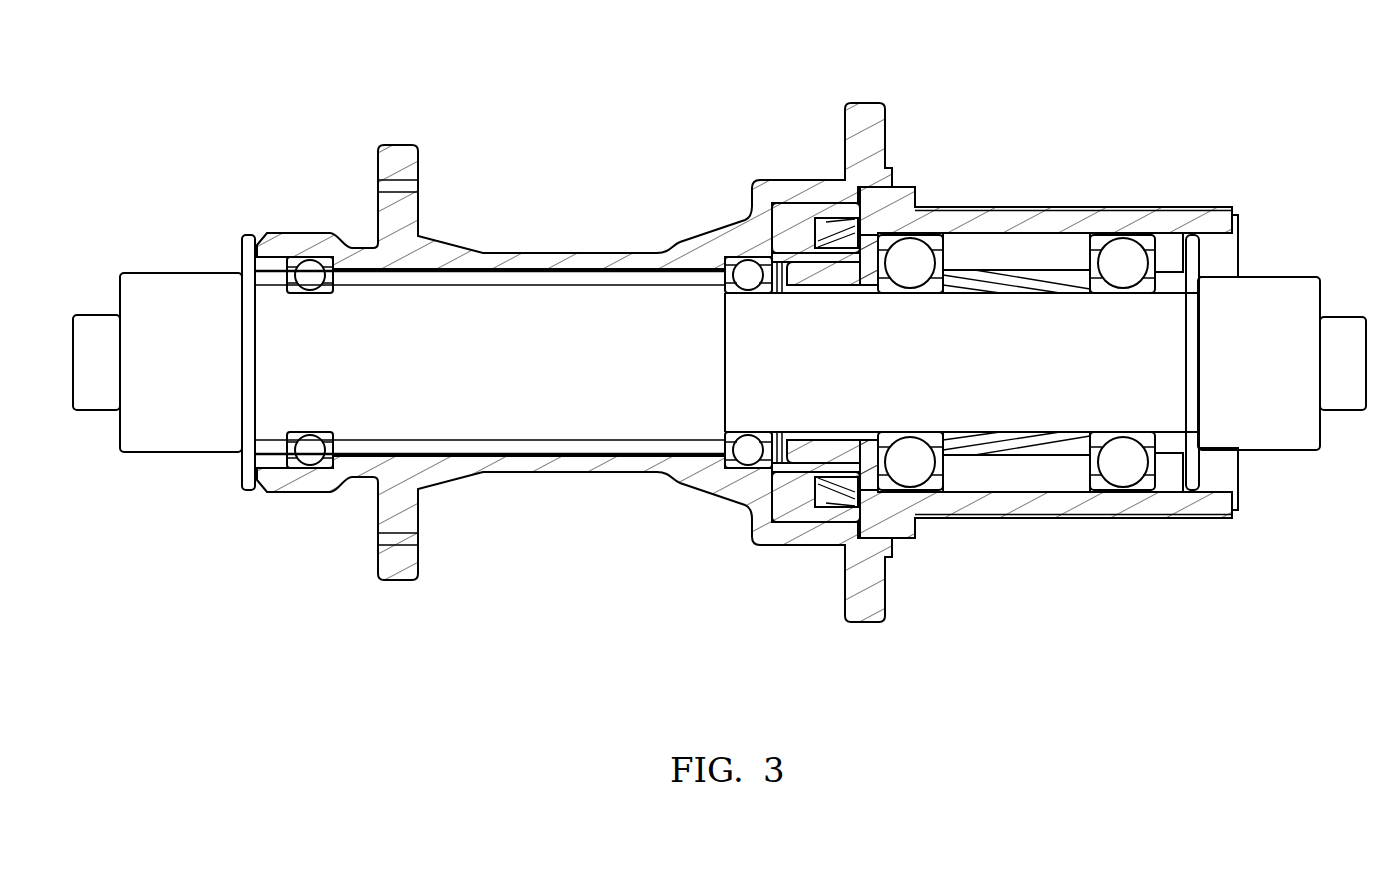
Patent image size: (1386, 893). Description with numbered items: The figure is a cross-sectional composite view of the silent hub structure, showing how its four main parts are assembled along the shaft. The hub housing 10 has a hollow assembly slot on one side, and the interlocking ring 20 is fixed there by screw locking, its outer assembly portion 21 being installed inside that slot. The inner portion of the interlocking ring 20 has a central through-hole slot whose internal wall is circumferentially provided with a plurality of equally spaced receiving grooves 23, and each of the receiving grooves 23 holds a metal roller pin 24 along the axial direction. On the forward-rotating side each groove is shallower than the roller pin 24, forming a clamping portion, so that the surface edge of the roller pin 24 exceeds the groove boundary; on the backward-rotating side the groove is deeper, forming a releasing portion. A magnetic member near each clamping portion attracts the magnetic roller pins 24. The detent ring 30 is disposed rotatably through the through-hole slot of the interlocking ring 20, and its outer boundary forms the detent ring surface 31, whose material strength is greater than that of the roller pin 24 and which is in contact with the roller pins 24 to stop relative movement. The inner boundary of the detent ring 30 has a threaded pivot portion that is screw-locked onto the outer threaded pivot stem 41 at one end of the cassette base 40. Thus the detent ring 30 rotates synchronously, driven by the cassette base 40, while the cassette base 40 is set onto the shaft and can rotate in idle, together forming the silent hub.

The hub housing 10 is at (590, 185).
The interlocking ring 20 is at (872, 274).
The assembly portion 21 is at (807, 200).
The receiving grooves 23 is at (840, 230).
The roller pin 24 is at (849, 232).
The detent ring 30 is at (760, 253).
The detent ring surface 31 is at (784, 233).
The cassette base 40 is at (1094, 180).
The pivot stem 41 is at (758, 258).